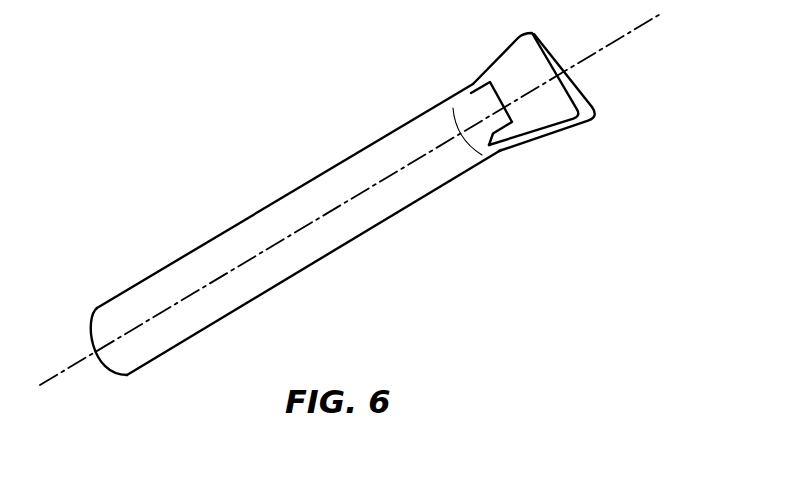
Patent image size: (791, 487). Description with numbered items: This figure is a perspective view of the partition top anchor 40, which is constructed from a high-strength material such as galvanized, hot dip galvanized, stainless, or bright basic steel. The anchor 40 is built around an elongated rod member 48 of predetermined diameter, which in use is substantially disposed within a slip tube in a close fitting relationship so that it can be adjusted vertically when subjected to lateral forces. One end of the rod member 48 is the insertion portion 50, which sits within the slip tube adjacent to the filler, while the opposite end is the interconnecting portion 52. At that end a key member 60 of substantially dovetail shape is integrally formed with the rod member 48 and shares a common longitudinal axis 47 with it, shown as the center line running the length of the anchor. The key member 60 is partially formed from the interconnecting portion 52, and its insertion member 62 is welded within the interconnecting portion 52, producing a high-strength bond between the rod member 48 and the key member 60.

The anchor 40 is at (367, 147).
The longitudinal axis 47 is at (615, 42).
The rod member 48 is at (422, 190).
The insertion portion 50 is at (135, 302).
The interconnecting portion 52 is at (477, 97).
The key member 60 is at (553, 115).
The insertion member 62 is at (475, 80).